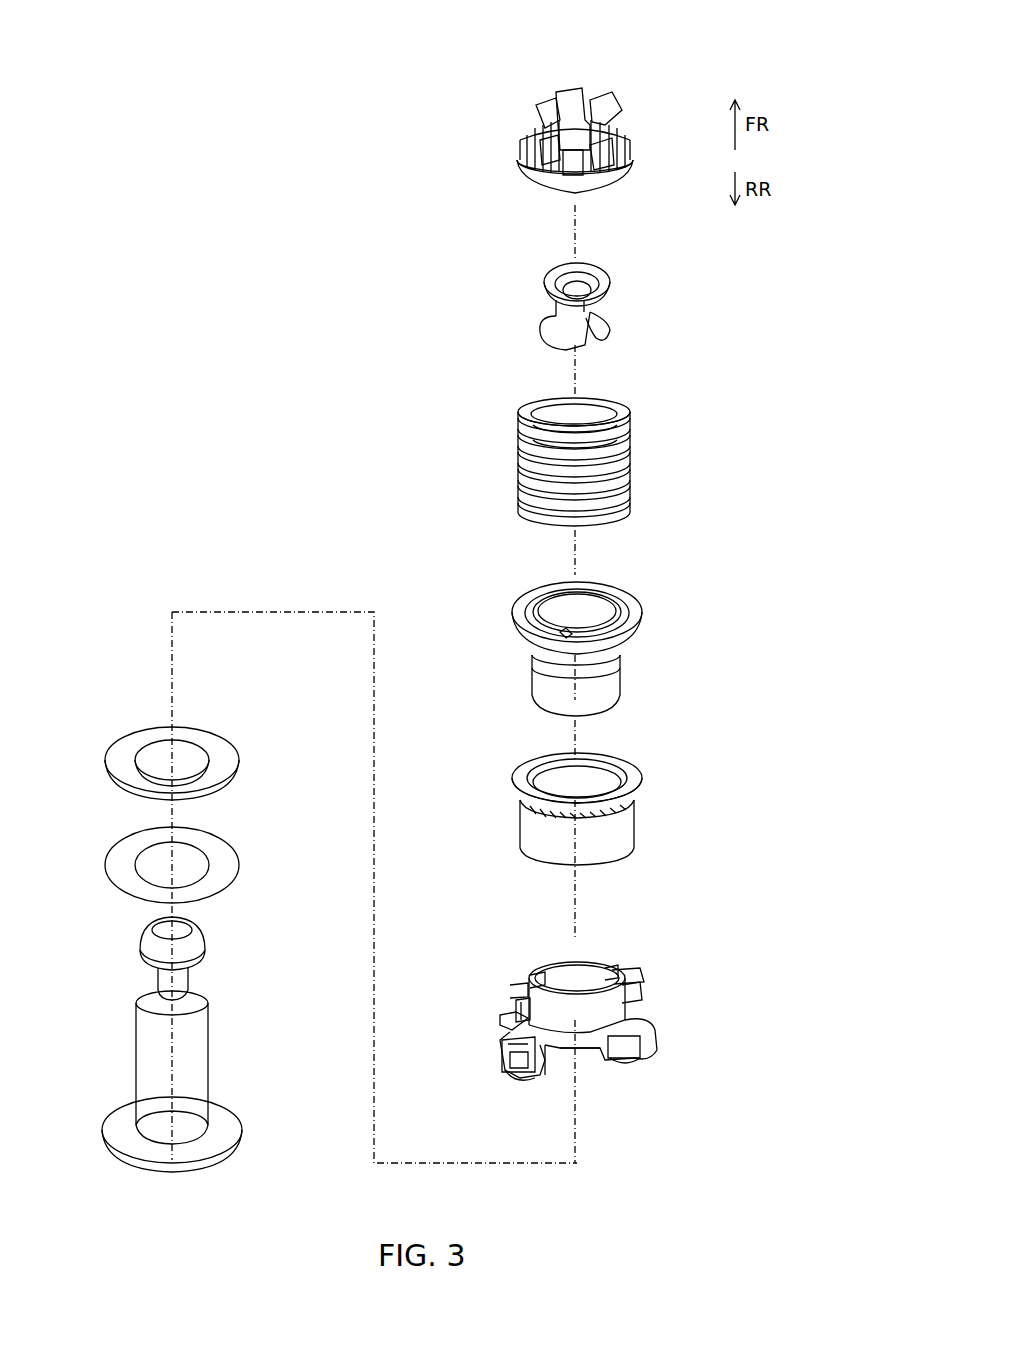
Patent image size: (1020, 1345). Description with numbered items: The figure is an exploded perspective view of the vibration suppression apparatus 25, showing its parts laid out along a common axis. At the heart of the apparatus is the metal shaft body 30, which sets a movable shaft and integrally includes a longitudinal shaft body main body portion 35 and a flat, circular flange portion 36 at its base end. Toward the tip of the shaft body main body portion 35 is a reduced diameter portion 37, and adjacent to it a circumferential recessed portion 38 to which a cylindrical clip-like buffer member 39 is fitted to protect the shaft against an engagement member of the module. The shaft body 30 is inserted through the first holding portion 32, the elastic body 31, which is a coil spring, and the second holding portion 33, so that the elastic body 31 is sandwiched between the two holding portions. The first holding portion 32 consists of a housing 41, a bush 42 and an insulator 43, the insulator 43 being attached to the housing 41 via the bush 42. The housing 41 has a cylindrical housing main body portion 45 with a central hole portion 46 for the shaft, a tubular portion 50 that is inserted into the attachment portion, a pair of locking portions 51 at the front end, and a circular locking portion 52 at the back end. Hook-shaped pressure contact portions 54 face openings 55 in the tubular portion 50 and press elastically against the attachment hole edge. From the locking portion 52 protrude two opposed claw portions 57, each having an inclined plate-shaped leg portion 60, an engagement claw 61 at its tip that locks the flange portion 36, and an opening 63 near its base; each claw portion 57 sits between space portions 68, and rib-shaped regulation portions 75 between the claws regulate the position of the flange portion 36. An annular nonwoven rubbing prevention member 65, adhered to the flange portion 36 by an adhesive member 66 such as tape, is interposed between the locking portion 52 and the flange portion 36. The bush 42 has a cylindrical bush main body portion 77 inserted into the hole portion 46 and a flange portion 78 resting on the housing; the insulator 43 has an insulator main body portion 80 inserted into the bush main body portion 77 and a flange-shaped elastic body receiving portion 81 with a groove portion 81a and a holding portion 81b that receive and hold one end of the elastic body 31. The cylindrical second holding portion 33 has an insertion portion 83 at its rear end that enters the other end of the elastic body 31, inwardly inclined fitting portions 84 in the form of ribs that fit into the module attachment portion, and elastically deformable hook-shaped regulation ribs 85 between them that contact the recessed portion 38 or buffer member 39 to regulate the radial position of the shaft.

The vibration suppression apparatus 25 is at (486, 61).
The shaft body 30 is at (191, 1044).
The elastic body 31 is at (627, 412).
The first holding portion 32 is at (670, 748).
The second holding portion 33 is at (633, 135).
The shaft body main body portion 35 is at (195, 1038).
The flange portion 36 is at (232, 1126).
The reduced diameter portion 37 is at (200, 942).
The recessed portion 38 is at (193, 980).
The buffer member 39 is at (606, 280).
The housing 41 is at (580, 1020).
The bush 42 is at (598, 809).
The insulator 43 is at (622, 663).
The housing main body portion 45 is at (583, 962).
The hole portion 46 is at (555, 975).
The tubular portion 50 is at (640, 994).
The locking portions 51 is at (640, 972).
The locking portion 52 is at (588, 1046).
The pressure contact portions 54 is at (516, 1010).
The openings 55 is at (612, 972).
The claw portions 57 is at (648, 1062).
The leg portion 60 is at (503, 1045).
The engagement claw 61 is at (542, 1078).
The openings 63 is at (508, 1060).
The rubbing prevention member 65 is at (213, 743).
The adhesive member 66 is at (222, 850).
The space portions 68 is at (502, 1024).
The regulation portions 75 is at (642, 1046).
The bush main body portion 77 is at (630, 819).
The flange portion 78 is at (635, 785).
The insulator main body portion 80 is at (598, 683).
The elastic body receiving portion 81 is at (591, 628).
The groove portion 81a is at (620, 600).
The holding portion 81b is at (560, 636).
The insertion portion 83 is at (605, 183).
The fitting portions 84 is at (573, 84).
The regulation ribs 85 is at (594, 98).